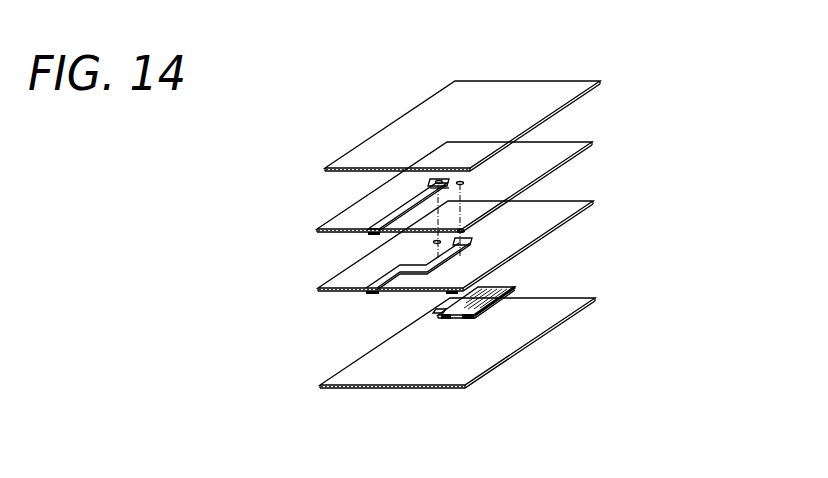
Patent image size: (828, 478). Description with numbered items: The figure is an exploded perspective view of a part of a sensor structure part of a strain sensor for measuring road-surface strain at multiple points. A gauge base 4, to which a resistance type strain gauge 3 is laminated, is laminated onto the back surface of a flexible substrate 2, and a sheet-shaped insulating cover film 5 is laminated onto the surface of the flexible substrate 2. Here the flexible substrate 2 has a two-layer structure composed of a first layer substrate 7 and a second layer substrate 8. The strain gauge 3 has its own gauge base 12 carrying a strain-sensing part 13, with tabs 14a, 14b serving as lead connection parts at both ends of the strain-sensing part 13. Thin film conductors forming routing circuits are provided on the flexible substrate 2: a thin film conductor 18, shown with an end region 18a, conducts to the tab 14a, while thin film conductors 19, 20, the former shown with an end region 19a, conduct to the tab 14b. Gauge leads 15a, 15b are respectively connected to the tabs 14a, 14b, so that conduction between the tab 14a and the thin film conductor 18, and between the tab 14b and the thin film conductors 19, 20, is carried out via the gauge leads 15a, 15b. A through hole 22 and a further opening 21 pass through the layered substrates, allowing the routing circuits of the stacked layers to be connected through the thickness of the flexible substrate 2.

The flexible substrate 2 is at (422, 217).
The strain gauge 3 is at (490, 303).
The gauge base 4 is at (345, 368).
The cover film 5 is at (422, 103).
The first layer substrate 7 is at (318, 231).
The second layer substrate 8 is at (279, 230).
The gauge base 12 is at (488, 285).
The strain-sensing part 13 is at (494, 299).
The tab 14a is at (446, 319).
The tab 14b is at (472, 319).
The gauge lead 15a is at (437, 310).
The gauge lead 15b is at (451, 294).
The thin film conductor 18 is at (384, 214).
The pad of first wiring 18a is at (441, 178).
The thin film conductor 19 is at (380, 282).
The pad of second wiring 19a is at (473, 240).
The thin film conductor 20 is at (369, 295).
The through hole 21 is at (433, 179).
The through hole 22 is at (464, 184).